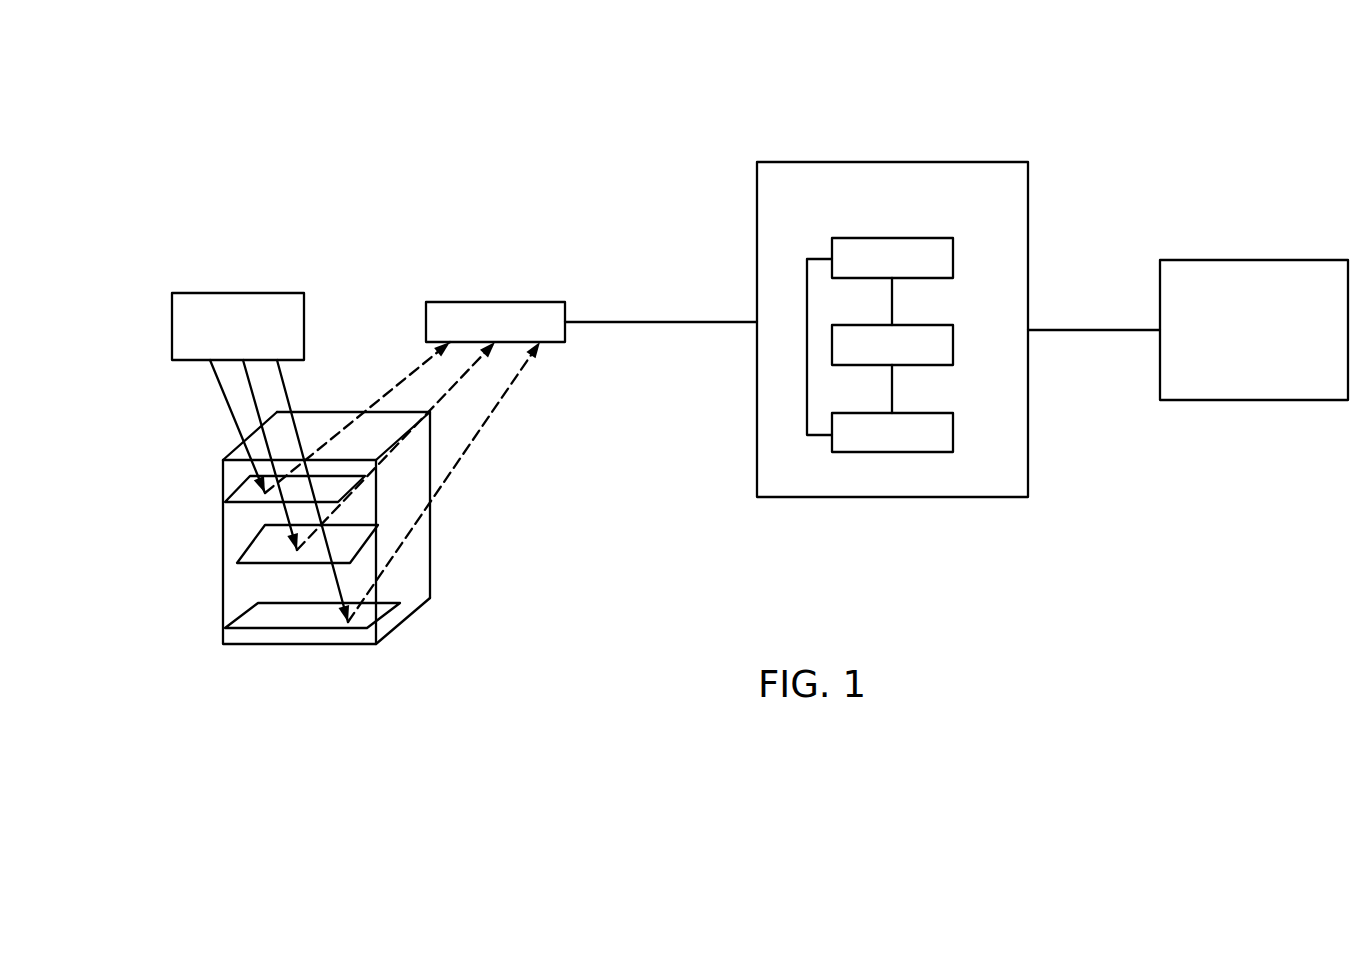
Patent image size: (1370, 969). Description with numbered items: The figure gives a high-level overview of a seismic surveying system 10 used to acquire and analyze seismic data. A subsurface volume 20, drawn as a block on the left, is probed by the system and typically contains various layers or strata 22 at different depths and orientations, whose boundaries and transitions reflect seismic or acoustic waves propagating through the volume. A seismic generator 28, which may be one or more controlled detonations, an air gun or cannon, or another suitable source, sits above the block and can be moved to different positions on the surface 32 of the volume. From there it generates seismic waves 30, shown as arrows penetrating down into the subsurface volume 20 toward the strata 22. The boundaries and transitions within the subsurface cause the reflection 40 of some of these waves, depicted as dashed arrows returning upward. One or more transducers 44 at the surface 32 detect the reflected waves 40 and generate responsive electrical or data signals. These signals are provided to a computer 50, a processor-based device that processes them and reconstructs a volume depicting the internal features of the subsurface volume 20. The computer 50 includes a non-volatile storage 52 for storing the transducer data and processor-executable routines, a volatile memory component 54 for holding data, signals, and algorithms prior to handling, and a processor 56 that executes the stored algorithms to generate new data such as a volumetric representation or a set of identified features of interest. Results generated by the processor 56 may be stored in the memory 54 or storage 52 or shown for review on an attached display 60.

The seismic surveying system 10 is at (1173, 80).
The subsurface volume 20 is at (437, 580).
The layers or strata 22 is at (260, 553).
The seismic generator 28 is at (243, 293).
The seismic waves 30 is at (282, 380).
The surface 32 is at (318, 425).
The reflection 40 is at (493, 412).
The transducer 44 is at (500, 302).
The computer 50 is at (868, 162).
The non-volatile storage 52 is at (953, 432).
The volatile memory component 54 is at (953, 345).
The processor 56 is at (953, 259).
The display 60 is at (1240, 260).